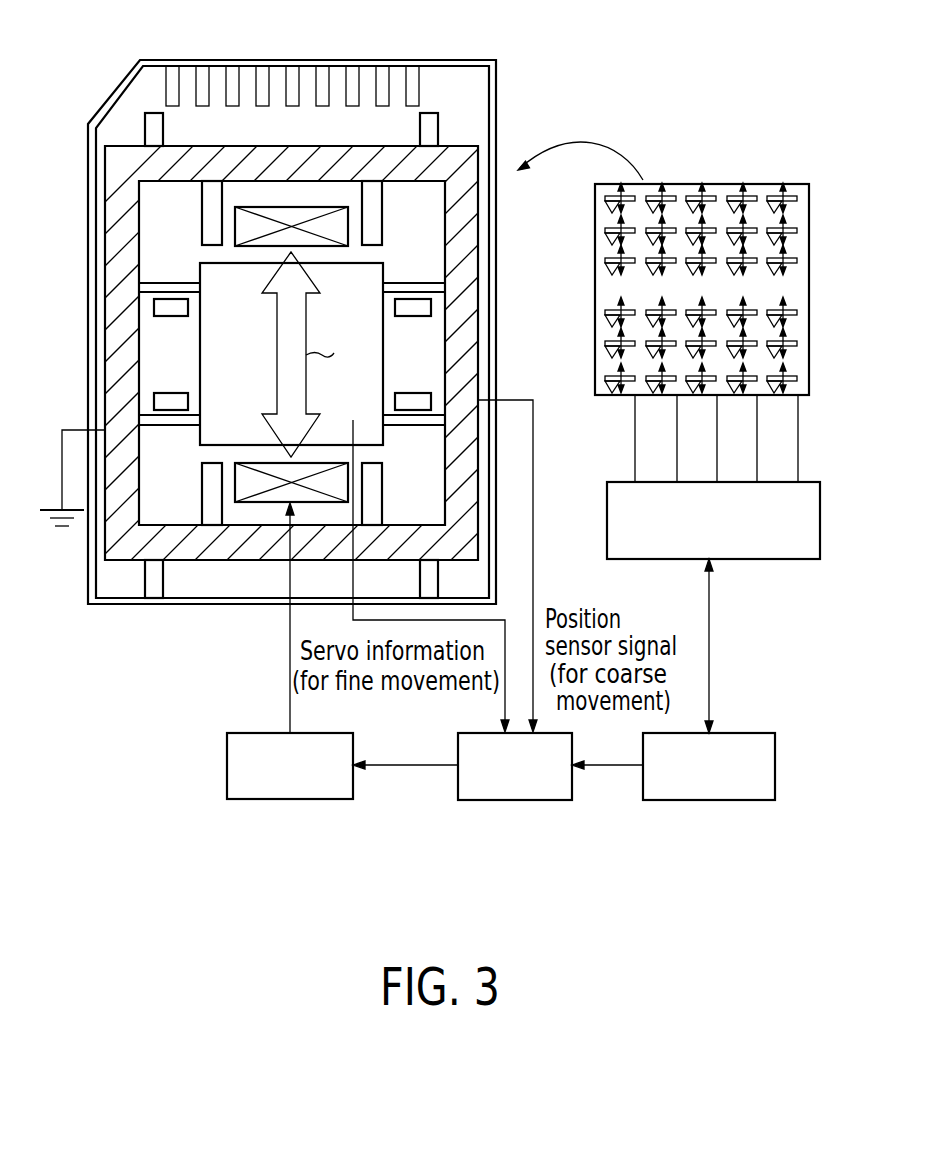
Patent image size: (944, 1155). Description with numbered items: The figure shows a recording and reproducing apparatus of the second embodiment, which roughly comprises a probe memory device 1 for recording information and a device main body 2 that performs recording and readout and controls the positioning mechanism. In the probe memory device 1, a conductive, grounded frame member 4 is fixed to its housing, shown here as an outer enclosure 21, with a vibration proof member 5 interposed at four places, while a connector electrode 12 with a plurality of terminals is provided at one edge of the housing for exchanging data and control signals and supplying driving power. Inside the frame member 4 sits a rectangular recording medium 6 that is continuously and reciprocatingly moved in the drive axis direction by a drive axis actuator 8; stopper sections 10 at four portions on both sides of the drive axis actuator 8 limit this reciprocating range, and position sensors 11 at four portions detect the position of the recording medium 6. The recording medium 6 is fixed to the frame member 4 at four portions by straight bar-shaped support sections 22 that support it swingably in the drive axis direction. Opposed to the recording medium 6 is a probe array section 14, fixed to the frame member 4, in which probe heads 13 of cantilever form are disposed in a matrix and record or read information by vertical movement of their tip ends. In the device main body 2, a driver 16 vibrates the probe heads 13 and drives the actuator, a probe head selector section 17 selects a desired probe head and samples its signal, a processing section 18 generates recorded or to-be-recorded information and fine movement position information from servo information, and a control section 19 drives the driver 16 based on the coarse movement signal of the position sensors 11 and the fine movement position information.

The probe memory device 1 is at (585, 92).
The device main body 2 is at (410, 820).
The frame member 4 is at (104, 366).
The vibration proof member 5 is at (145, 130).
The recording medium 6 is at (350, 262).
The drive axis actuator 8 is at (283, 207).
The stopper sections 10 is at (202, 210).
The position sensors 11 is at (170, 316).
The connector electrode 12 is at (153, 50).
The probe heads 13 is at (797, 257).
The probe array section 14 is at (809, 325).
The driver 16 is at (262, 800).
The probe head selector section 17 is at (822, 515).
The processing section 18 is at (690, 800).
The control section 19 is at (516, 800).
The housing 21 is at (87, 300).
The support sections 22 is at (176, 283).